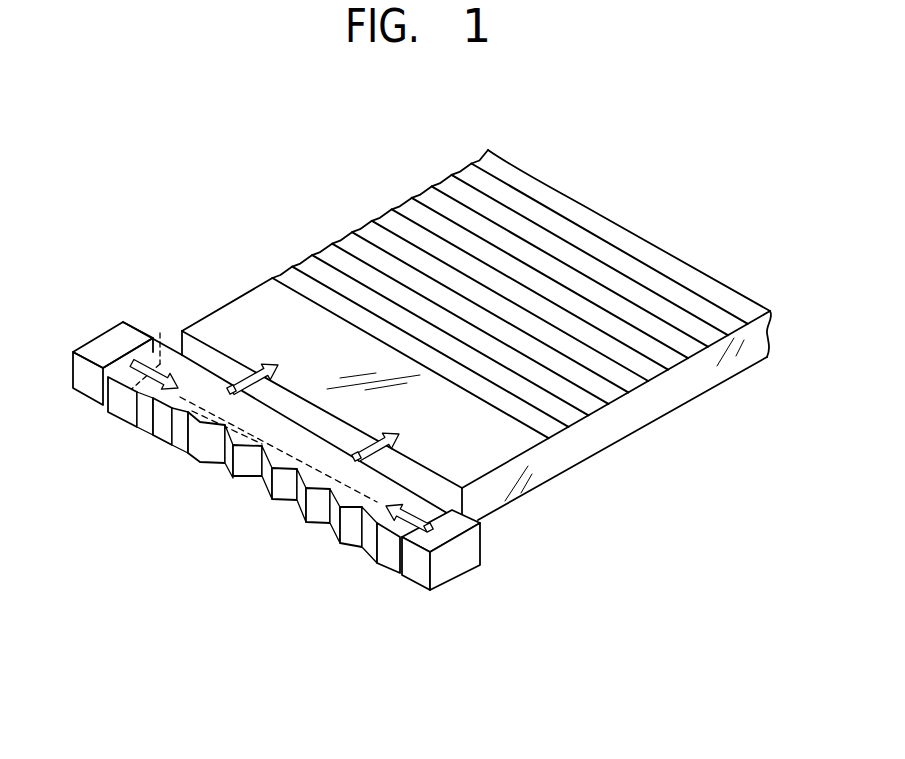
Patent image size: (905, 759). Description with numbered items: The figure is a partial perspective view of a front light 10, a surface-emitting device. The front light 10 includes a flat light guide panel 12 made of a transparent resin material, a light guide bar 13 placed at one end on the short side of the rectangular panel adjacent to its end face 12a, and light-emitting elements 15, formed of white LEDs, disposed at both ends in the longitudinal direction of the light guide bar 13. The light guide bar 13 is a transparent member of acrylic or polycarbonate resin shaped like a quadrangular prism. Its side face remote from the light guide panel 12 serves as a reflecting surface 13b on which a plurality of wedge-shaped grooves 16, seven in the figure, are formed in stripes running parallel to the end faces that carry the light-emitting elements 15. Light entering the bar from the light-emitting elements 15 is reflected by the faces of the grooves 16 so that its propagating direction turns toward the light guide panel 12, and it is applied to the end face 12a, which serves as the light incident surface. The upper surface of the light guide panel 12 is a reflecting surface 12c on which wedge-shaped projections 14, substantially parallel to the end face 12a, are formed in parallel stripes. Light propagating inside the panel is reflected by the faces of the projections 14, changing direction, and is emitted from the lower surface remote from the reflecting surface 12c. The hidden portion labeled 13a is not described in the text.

The front light 10 is at (616, 193).
The light guide panel 12 is at (703, 382).
The end face 12a is at (177, 333).
The reflecting surface 12c is at (262, 318).
The light guide bar 13 is at (328, 546).
The fiber portion in groove 13a is at (193, 398).
The reflecting surface 13b is at (293, 497).
The projections 14 is at (373, 252).
The light-emitting elements 15 is at (106, 346).
The grooves 16 is at (252, 472).